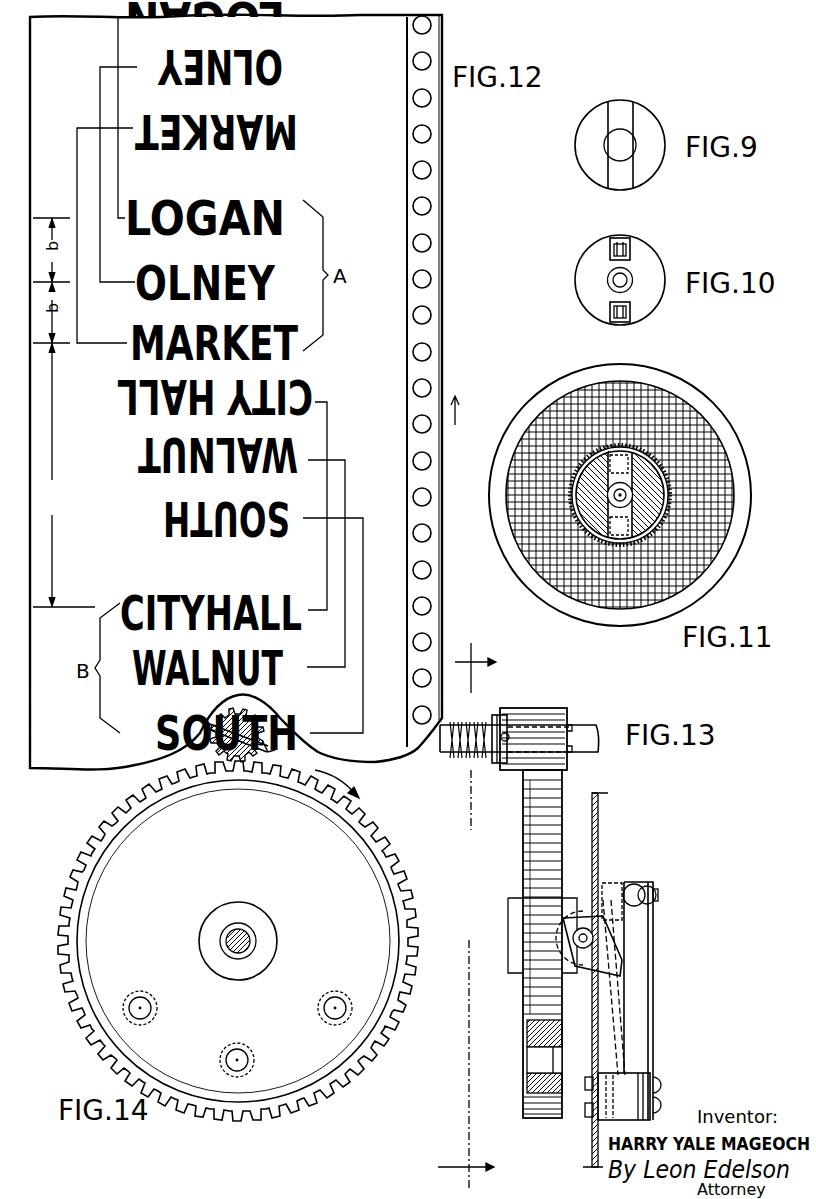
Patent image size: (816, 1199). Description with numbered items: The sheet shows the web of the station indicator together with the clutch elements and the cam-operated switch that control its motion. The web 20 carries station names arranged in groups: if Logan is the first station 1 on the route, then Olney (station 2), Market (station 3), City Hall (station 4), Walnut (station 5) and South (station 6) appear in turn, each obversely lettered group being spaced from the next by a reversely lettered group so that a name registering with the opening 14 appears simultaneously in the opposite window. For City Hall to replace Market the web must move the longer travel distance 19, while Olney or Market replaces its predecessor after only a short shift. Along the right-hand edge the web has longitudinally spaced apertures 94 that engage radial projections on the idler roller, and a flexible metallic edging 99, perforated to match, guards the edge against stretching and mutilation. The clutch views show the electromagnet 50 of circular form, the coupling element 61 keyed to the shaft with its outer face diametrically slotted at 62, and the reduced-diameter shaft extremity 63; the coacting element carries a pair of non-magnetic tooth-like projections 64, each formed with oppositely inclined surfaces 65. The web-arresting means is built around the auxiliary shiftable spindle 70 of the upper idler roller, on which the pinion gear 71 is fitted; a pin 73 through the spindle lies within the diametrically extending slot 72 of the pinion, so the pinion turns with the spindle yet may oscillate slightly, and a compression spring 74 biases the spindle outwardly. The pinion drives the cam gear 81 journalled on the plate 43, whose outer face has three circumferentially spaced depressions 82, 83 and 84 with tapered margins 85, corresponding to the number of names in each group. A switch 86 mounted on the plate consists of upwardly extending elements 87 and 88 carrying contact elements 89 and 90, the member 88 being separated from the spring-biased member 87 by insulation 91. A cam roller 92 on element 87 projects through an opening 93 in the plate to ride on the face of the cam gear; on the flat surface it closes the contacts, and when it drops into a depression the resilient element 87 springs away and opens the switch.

In FIG. 12, the first station 1 is at (115, 40).
In FIG. 12, the second station 2 is at (97, 105).
In FIG. 12, the third station 3 is at (72, 162).
In FIG. 12, the fourth station 4 is at (330, 433).
In FIG. 12, the fifth station 5 is at (348, 495).
In FIG. 12, the sixth station 6 is at (366, 563).
In FIG. 12, the tape advance distance 19 is at (64, 475).
In FIG. 12, the web 20 is at (383, 160).
In FIG. 13, the plate 43 is at (597, 813).
In FIG. 11, the electromagnet 50 is at (557, 403).
In FIG. 9, the coupling element 61 is at (650, 127).
In FIG. 11, the coupling element 61 is at (650, 475).
In FIG. 9, the slot 62 is at (622, 110).
In FIG. 11, the slot 62 is at (632, 463).
In FIG. 11, the reduced diameter extremity 63 is at (628, 495).
In FIG. 10, the tooth-like projections 64 is at (620, 238).
In FIG. 11, the tooth-like projections 64 is at (628, 525).
In FIG. 10, the inclined surfaces 65 is at (610, 250).
In FIG. 13, the auxiliary shiftable spindle 70 is at (585, 737).
In FIG. 13, the pinion gear 71 is at (556, 694).
In FIG. 14, the pinion gear 71 is at (215, 752).
In FIG. 13, the slot 72 is at (508, 748).
In FIG. 14, the slot 72 is at (215, 735).
In FIG. 13, the pin 73 is at (500, 715).
In FIG. 14, the pin 73 is at (268, 752).
In FIG. 13, the compression spring 74 is at (468, 714).
In FIG. 13, the cam gear 81 is at (532, 820).
In FIG. 14, the cam gear 81 is at (138, 852).
In FIG. 14, the depression 82 is at (130, 1005).
In FIG. 13, the depression 83 is at (543, 1063).
In FIG. 14, the depression 83 is at (233, 1063).
In FIG. 14, the depression 84 is at (338, 1017).
In FIG. 13, the tapered margin 85 is at (558, 1043).
In FIG. 13, the switch 86 is at (630, 1073).
In FIG. 13, the switch element 87 is at (622, 978).
In FIG. 13, the switch element 88 is at (652, 997).
In FIG. 13, the contact element 89 is at (627, 883).
In FIG. 13, the contact element 90 is at (647, 880).
In FIG. 13, the insulation 91 is at (660, 1093).
In FIG. 13, the cam roller 92 is at (585, 917).
In FIG. 13, the opening 93 is at (595, 967).
In FIG. 12, the apertures 94 is at (424, 280).
In FIG. 12, the flexible metallic edging 99 is at (430, 328).
In FIG. 13, the opening 14 is at (470, 915).